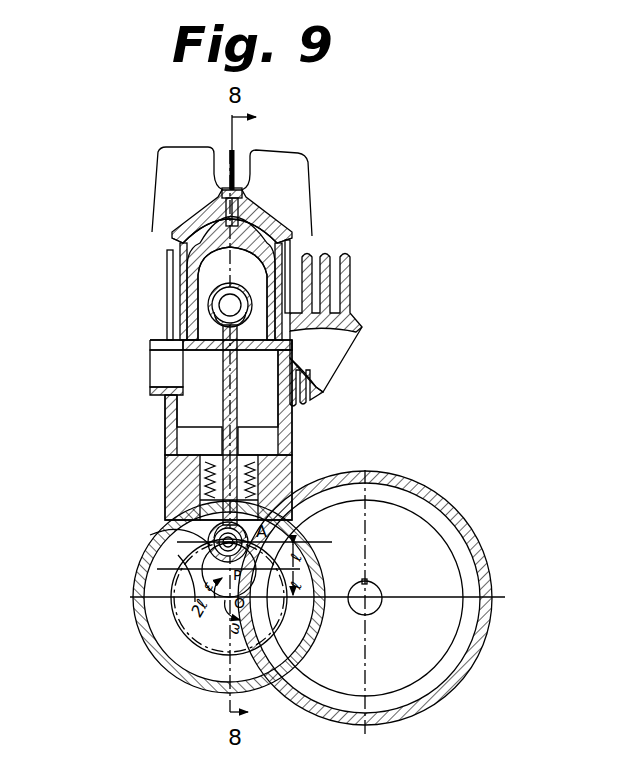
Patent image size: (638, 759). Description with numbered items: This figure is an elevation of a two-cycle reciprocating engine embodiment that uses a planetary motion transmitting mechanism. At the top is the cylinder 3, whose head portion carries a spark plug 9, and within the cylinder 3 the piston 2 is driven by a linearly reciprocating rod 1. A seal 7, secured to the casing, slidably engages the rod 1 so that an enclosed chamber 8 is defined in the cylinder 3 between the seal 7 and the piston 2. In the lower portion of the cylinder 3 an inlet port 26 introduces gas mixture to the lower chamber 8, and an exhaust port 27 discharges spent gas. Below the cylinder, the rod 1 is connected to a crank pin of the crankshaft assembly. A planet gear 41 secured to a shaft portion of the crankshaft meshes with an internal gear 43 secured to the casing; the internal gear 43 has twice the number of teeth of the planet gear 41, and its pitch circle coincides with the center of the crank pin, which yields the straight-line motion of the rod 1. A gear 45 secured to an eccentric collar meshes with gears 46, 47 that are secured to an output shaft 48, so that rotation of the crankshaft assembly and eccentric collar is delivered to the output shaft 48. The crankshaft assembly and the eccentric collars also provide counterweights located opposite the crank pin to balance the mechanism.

The linearly reciprocating rod 1 is at (196, 352).
The piston 2 is at (183, 258).
The cylinder 3 is at (172, 290).
The seal 7 is at (195, 470).
The enclosed chamber 8 is at (262, 410).
The spark plug 9 is at (230, 212).
The inlet port 26 is at (156, 376).
The exhaust port 27 is at (333, 356).
The planet gear 41 is at (207, 545).
The internal gear 43 is at (185, 565).
The gear 45 is at (162, 585).
The gear 46 is at (405, 498).
The gear 47 is at (405, 498).
The output shaft 48 is at (382, 594).